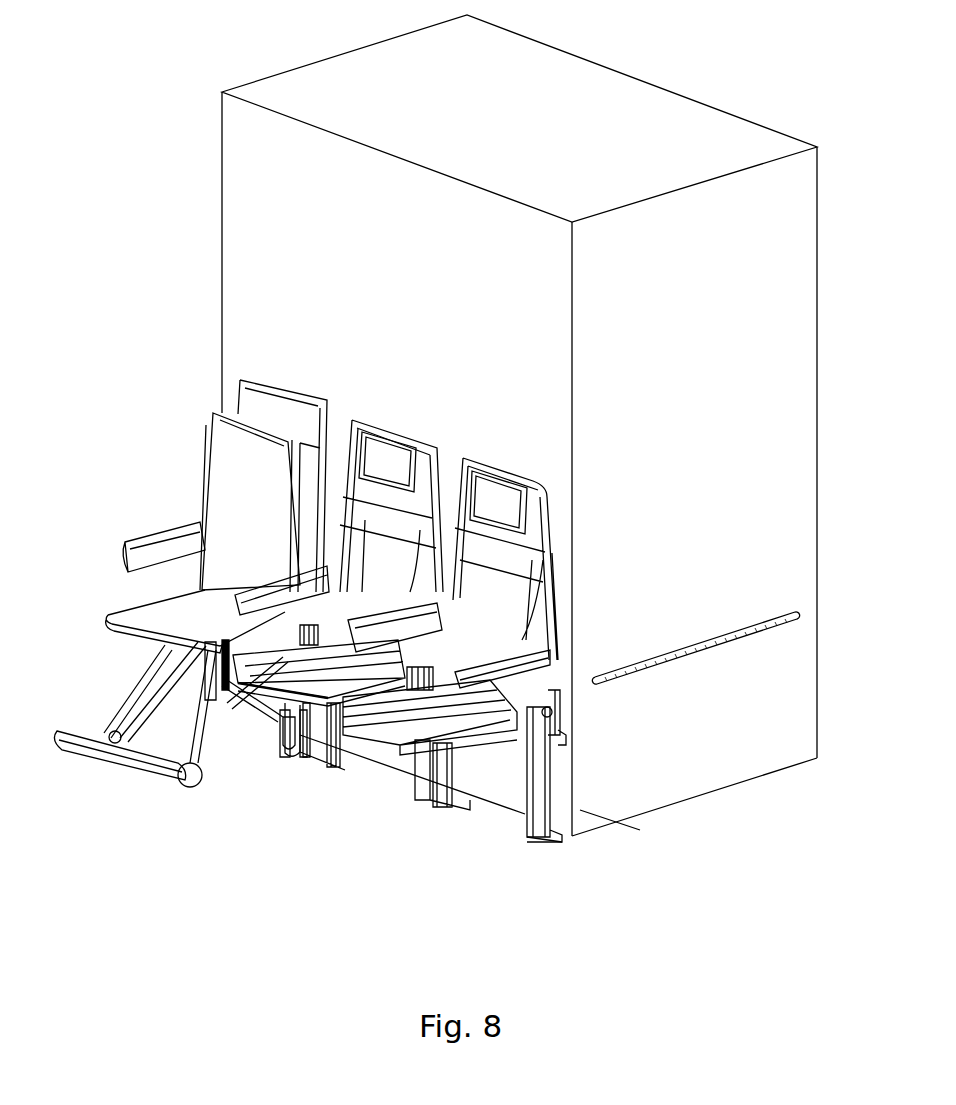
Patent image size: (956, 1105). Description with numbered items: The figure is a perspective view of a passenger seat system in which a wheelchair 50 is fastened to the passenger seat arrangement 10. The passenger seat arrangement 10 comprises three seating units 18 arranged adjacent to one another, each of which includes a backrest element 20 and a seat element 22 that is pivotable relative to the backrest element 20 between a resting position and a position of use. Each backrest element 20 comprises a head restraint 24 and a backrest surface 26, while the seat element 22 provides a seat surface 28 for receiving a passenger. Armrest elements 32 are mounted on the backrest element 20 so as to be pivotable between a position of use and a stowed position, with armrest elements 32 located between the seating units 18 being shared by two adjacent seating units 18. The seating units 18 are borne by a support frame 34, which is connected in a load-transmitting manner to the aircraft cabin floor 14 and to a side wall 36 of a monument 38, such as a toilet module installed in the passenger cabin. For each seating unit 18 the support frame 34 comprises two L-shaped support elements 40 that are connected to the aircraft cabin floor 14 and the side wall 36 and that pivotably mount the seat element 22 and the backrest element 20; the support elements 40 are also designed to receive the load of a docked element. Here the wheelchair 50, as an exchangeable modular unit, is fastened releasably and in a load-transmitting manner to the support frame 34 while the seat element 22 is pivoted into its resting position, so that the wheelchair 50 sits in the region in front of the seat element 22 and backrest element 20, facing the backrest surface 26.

The passenger seat arrangement 10 is at (191, 378).
The aircraft cabin floor 14 is at (100, 793).
The seating units 18 is at (444, 453).
The backrest element 20 is at (551, 514).
The seat element 22 is at (505, 738).
The head restraint 24 is at (498, 490).
The backrest surface 26 is at (508, 597).
The seat surface 28 is at (387, 700).
The armrest elements 32 is at (517, 660).
The support frame 34 is at (556, 743).
The side wall 36 is at (248, 177).
The monument 38 is at (256, 66).
The support elements 40 is at (536, 857).
The wheelchair 50 is at (192, 518).